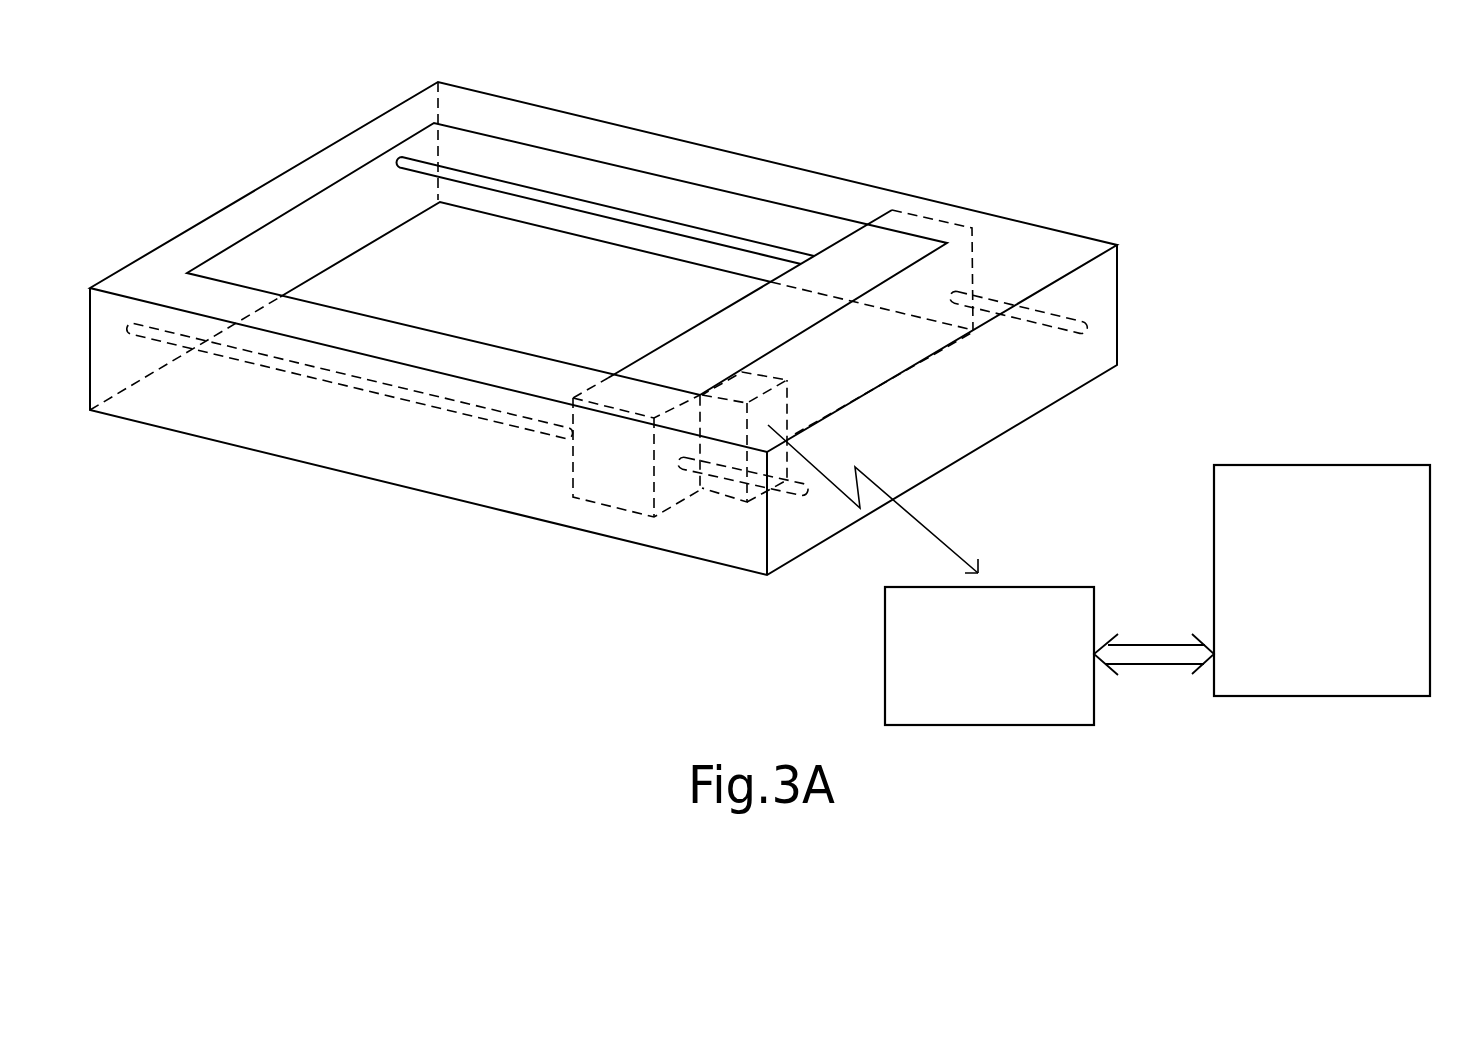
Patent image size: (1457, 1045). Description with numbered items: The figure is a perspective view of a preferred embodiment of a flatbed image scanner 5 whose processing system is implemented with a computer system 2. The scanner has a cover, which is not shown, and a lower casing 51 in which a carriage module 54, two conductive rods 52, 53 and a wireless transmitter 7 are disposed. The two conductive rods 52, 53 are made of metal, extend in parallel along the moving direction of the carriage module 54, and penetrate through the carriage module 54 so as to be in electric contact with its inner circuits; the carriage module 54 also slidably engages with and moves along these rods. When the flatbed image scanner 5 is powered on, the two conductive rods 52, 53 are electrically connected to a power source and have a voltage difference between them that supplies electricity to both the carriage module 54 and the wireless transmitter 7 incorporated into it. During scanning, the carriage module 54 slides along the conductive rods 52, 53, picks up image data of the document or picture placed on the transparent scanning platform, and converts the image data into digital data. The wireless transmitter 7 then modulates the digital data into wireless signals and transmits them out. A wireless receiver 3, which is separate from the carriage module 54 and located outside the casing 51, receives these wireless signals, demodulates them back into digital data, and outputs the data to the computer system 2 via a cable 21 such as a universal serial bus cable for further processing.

The flatbed image scanner 5 is at (618, 152).
The lower casing 51 is at (1045, 382).
The conductive rod 52 is at (475, 177).
The conductive rod 53 is at (295, 368).
The carriage module 54 is at (930, 228).
The wireless transmitter 7 is at (722, 422).
The wireless receiver 3 is at (1040, 602).
The computer system 2 is at (1365, 480).
The cable 21 is at (1147, 657).